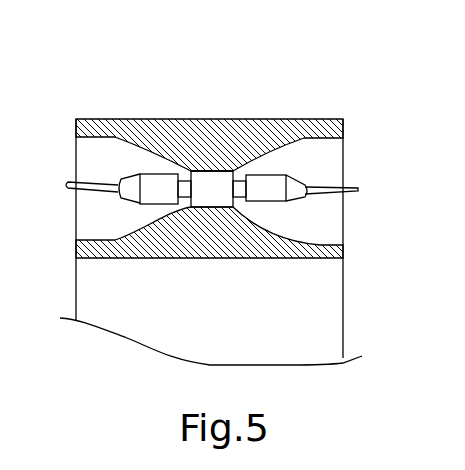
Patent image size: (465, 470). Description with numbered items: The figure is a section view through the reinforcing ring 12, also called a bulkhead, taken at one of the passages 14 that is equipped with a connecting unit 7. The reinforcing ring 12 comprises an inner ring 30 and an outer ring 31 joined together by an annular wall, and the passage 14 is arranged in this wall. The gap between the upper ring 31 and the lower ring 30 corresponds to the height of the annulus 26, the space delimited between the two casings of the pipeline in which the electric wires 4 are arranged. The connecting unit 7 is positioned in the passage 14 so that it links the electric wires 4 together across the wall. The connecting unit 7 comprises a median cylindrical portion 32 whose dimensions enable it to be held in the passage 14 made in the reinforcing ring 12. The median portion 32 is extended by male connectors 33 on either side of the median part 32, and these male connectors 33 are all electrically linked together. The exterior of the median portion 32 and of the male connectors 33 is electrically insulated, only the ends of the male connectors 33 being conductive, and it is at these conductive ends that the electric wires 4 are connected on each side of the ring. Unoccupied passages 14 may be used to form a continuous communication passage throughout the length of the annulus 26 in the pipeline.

The electric wires 4 is at (63, 194).
The connecting unit 7 is at (173, 206).
The reinforcing ring 12 is at (356, 318).
The passage 14 is at (218, 168).
The annulus 26 is at (112, 158).
The inner ring 30 is at (179, 258).
The outer ring 31 is at (195, 119).
The median cylindrical portion 32 is at (203, 183).
The male connectors 33 is at (153, 185).